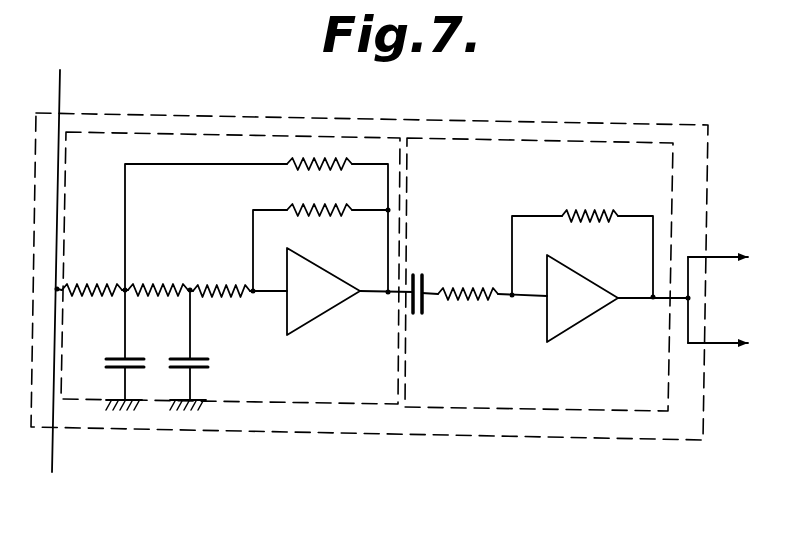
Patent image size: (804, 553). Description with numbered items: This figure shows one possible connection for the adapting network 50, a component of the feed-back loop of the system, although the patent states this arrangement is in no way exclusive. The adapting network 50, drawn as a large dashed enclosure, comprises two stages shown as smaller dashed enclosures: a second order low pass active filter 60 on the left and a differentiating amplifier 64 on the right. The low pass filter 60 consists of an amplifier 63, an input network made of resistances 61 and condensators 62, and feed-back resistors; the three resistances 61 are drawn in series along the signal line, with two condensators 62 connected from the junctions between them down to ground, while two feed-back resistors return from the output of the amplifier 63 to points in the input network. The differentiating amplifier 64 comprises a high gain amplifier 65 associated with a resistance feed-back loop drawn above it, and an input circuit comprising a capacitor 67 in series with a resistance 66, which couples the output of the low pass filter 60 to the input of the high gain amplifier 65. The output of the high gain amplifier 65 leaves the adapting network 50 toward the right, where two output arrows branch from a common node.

The adapting network 50 is at (348, 119).
The second order low pass active filter 60 is at (295, 404).
The resistance 61 is at (213, 287).
The condensator 62 is at (182, 362).
The amplifier 63 is at (269, 246).
The differentiating amplifier 64 is at (505, 407).
The high gain amplifier 65 is at (600, 276).
The resistance 66 is at (472, 300).
The capacitor 67 is at (417, 277).